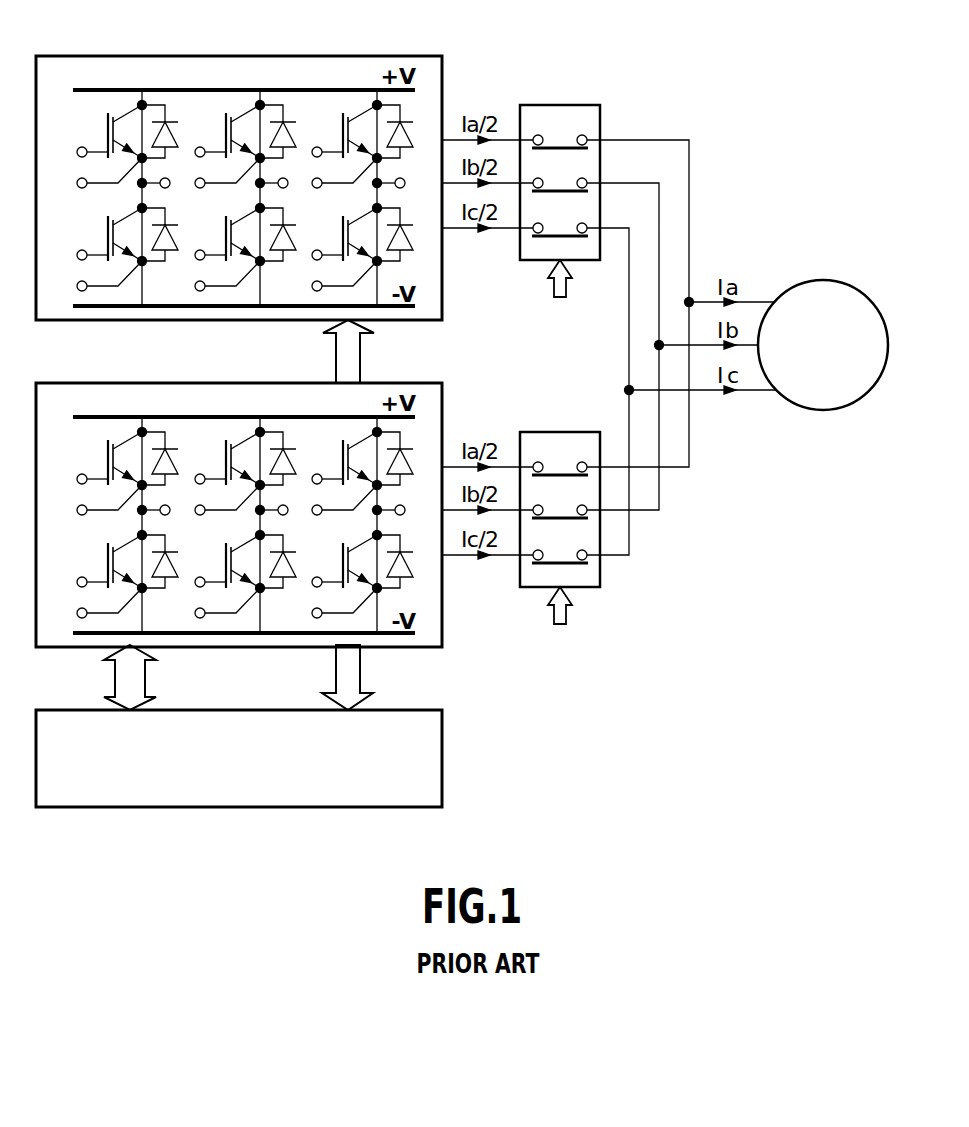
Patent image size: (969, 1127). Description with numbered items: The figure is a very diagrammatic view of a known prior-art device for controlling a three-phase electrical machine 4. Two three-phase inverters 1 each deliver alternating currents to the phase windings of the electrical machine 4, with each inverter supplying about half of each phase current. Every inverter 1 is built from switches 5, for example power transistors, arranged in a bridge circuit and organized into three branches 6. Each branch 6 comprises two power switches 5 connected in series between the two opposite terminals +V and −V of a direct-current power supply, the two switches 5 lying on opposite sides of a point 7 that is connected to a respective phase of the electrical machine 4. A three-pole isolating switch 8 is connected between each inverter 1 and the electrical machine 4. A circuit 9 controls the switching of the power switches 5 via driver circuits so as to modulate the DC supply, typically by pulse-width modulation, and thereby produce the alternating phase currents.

The three-phase inverter 1 is at (458, 309).
The electrical machine 4 is at (822, 280).
The power switch 5 is at (126, 115).
The branch 6 is at (112, 198).
The point 7 is at (169, 178).
The three-pole isolating switch 8 is at (547, 103).
The circuit 9 is at (233, 763).